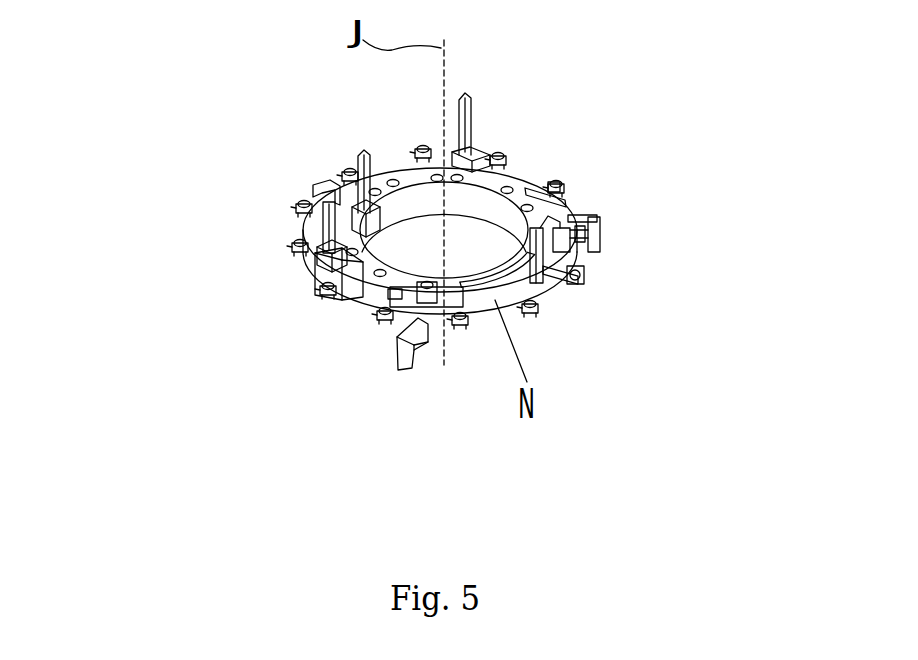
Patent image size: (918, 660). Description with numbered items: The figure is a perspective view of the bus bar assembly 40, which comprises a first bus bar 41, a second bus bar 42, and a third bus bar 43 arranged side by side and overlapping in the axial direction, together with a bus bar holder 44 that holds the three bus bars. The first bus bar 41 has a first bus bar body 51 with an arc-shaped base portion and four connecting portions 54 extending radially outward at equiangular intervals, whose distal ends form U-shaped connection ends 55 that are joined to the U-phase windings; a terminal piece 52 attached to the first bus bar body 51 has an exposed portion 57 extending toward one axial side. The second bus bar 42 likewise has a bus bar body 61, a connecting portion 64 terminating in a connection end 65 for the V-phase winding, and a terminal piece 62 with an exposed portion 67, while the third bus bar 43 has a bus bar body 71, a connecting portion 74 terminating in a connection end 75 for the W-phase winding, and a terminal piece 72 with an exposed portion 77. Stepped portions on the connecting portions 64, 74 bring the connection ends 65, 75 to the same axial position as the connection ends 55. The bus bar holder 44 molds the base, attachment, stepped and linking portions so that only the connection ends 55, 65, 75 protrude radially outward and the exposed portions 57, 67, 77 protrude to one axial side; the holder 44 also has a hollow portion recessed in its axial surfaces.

The bus bar assembly 40 is at (607, 120).
The first bus bar 41 is at (195, 284).
The second bus bar 42 is at (447, 217).
The third bus bar 43 is at (659, 214).
The bus bar holder 44 is at (568, 197).
The first bus bar body 51 is at (214, 318).
The terminal piece 52 is at (187, 226).
The connecting portion 54 is at (340, 316).
The connection end 55 is at (333, 290).
The exposed portion 57 is at (320, 210).
The bus bar body 61 is at (717, 257).
The terminal piece 62 is at (204, 186).
The connecting portion 64 is at (593, 252).
The connection end 65 is at (600, 240).
The exposed portion 67 is at (358, 172).
The bus bar body 71 is at (698, 302).
The terminal piece 72 is at (540, 106).
The connecting portion 74 is at (560, 280).
The connection end 75 is at (580, 278).
The exposed portion 77 is at (563, 82).